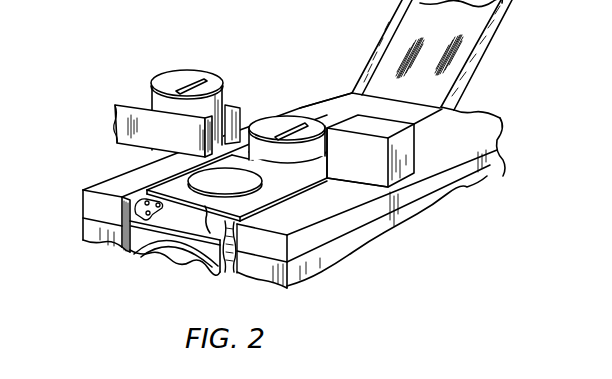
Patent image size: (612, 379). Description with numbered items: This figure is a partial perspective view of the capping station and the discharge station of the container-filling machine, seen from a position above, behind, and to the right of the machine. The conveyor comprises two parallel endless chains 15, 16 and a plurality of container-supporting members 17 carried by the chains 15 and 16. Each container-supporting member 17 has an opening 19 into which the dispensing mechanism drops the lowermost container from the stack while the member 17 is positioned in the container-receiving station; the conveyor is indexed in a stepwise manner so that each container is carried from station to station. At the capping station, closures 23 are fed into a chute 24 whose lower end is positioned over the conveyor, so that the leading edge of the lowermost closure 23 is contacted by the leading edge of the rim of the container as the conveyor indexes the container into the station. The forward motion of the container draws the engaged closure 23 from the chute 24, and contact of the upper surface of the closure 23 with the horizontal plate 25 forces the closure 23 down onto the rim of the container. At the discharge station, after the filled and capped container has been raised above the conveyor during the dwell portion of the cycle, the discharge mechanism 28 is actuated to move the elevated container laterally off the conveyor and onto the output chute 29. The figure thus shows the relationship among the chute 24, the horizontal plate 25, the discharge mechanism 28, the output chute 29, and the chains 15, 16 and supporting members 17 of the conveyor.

The endless chain 15 is at (157, 212).
The endless chain 16 is at (235, 241).
The container-supporting member 17 is at (328, 174).
The opening 19 is at (238, 192).
The closure 23 is at (182, 82).
The chute 24 is at (490, 50).
The horizontal plate 25 is at (347, 108).
The discharge mechanism 28 is at (369, 169).
The output chute 29 is at (117, 118).